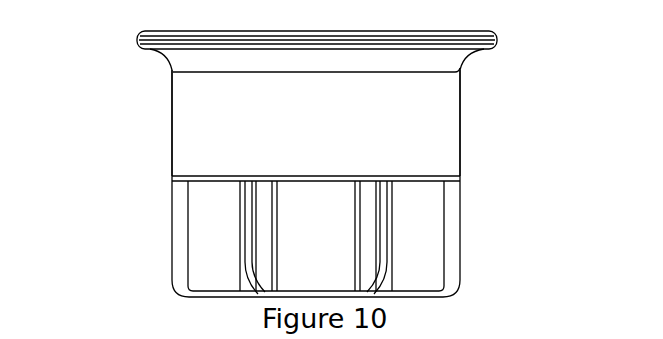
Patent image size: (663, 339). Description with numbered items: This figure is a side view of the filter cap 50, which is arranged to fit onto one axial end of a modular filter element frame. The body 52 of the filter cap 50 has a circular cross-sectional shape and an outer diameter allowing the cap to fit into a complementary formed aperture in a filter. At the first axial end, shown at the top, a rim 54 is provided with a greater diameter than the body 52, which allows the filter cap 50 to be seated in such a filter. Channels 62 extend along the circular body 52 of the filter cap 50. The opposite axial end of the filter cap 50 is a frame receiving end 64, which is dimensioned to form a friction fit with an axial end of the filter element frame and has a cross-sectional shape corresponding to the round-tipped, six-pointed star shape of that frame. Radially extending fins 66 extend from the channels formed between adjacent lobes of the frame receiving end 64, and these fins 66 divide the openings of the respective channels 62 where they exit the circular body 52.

The filter cap 50 is at (113, 67).
The body 52 is at (448, 118).
The rim 54 is at (482, 46).
The channels 62 is at (264, 184).
The frame receiving end 64 is at (486, 235).
The fins 66 is at (375, 255).